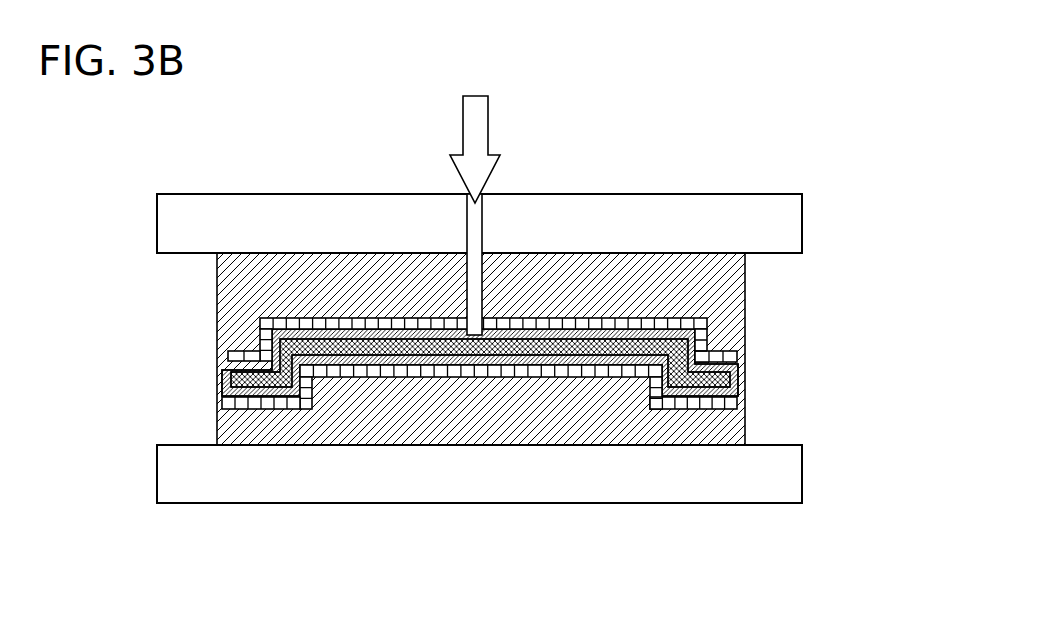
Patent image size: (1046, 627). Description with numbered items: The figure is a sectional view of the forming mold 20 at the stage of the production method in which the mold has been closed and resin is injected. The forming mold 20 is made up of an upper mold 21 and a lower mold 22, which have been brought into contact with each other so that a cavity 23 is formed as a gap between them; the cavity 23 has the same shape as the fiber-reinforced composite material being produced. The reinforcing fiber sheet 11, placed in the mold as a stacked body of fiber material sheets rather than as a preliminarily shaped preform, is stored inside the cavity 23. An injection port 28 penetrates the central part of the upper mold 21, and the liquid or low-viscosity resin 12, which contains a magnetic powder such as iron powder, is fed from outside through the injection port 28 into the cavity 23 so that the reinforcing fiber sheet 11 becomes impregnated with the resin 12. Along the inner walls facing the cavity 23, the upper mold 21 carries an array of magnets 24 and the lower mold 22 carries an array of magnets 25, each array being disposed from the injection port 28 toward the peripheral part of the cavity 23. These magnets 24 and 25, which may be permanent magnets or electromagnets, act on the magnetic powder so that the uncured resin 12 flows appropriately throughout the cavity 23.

The forming mold 20 is at (820, 135).
The upper mold 21 is at (745, 280).
The lower mold 22 is at (745, 437).
The cavity 23 is at (738, 387).
The reinforcing fiber sheet 11 is at (730, 377).
The magnets 24 is at (597, 318).
The magnets 25 is at (597, 378).
The injection port 28 is at (467, 222).
The resin 12 is at (473, 95).